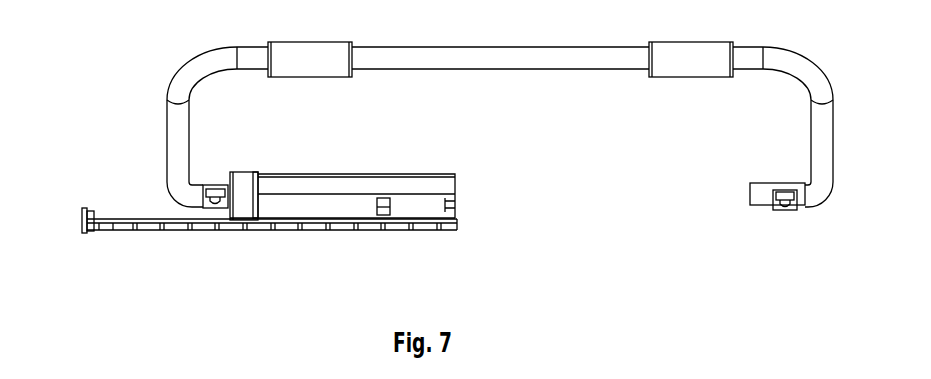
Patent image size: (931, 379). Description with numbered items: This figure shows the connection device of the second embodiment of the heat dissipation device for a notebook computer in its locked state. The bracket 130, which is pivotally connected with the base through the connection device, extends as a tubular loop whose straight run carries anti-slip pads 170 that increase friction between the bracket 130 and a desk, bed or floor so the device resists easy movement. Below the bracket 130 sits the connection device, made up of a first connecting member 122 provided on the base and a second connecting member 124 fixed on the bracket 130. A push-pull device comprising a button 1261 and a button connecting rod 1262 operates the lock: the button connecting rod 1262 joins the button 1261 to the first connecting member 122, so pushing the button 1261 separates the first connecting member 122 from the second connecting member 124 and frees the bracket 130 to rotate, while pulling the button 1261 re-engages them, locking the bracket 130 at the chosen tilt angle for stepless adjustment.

The first connecting member 122 is at (310, 185).
The second connecting member 124 is at (238, 200).
The button 1261 is at (82, 224).
The button connecting rod 1262 is at (192, 222).
The bracket 130 is at (497, 55).
The anti-slip pads 170 is at (682, 63).